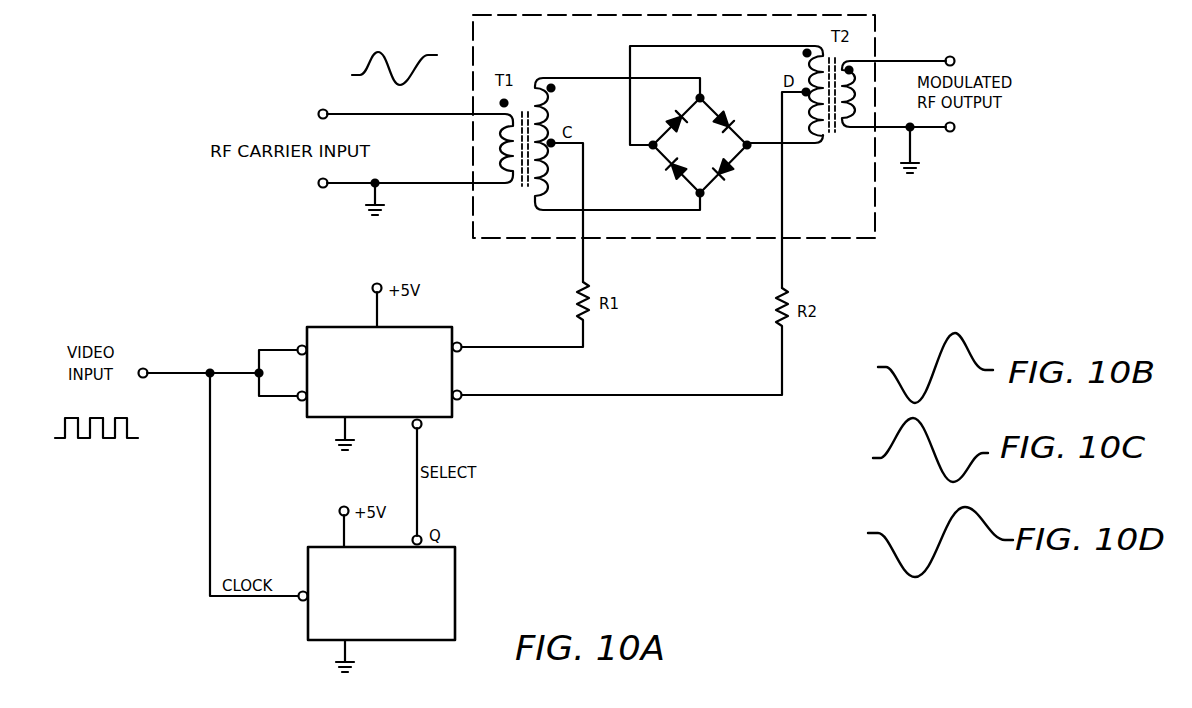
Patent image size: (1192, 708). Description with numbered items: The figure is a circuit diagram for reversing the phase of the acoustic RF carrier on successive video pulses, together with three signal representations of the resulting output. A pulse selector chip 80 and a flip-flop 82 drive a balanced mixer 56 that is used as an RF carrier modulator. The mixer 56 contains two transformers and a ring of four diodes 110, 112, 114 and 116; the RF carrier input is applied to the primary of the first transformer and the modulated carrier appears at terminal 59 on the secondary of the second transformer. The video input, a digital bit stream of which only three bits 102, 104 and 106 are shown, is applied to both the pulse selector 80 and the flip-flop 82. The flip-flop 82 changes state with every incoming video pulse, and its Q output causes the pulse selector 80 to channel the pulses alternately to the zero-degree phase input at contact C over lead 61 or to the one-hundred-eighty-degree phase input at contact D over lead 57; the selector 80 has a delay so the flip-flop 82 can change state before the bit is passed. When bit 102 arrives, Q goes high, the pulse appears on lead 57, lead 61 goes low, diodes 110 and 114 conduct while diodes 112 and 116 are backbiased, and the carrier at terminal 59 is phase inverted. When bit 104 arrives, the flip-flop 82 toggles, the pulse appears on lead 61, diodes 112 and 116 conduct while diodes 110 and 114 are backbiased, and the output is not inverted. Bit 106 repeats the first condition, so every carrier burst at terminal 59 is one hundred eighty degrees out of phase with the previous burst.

The balanced mixer 56 is at (833, 238).
The lead 57 is at (782, 178).
The terminal 59 is at (950, 56).
The lead 61 is at (583, 253).
The pulse selector chip 80 is at (445, 327).
The flip-flop 82 is at (455, 583).
The bit 102 is at (63, 429).
The bit 104 is at (98, 417).
The video pulse 106 is at (131, 427).
The diode 110 is at (673, 116).
The diode 112 is at (731, 113).
The diode 114 is at (736, 178).
The diode 116 is at (667, 173).